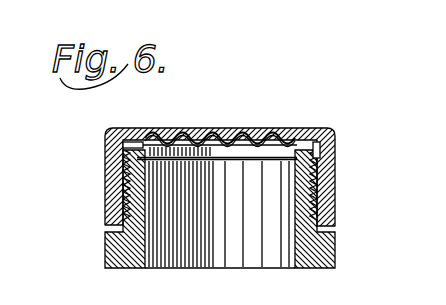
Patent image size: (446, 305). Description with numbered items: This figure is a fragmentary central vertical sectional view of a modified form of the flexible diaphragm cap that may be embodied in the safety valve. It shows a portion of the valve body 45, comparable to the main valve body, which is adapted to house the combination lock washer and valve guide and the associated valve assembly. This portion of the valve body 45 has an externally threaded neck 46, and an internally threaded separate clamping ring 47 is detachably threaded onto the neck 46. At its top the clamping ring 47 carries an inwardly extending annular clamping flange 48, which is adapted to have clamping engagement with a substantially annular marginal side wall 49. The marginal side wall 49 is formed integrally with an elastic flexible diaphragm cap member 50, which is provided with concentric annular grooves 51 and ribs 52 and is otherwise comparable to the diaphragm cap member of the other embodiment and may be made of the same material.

The portion of the valve body 45 is at (103, 252).
The externally threaded neck 46 is at (105, 193).
The clamping ring 47 is at (337, 183).
The clamping flange 48 is at (316, 130).
The marginal side wall 49 is at (337, 150).
The elastic flexible diaphragm cap member 50 is at (286, 130).
The concentric annular grooves 51 is at (268, 130).
The ribs 52 is at (252, 130).